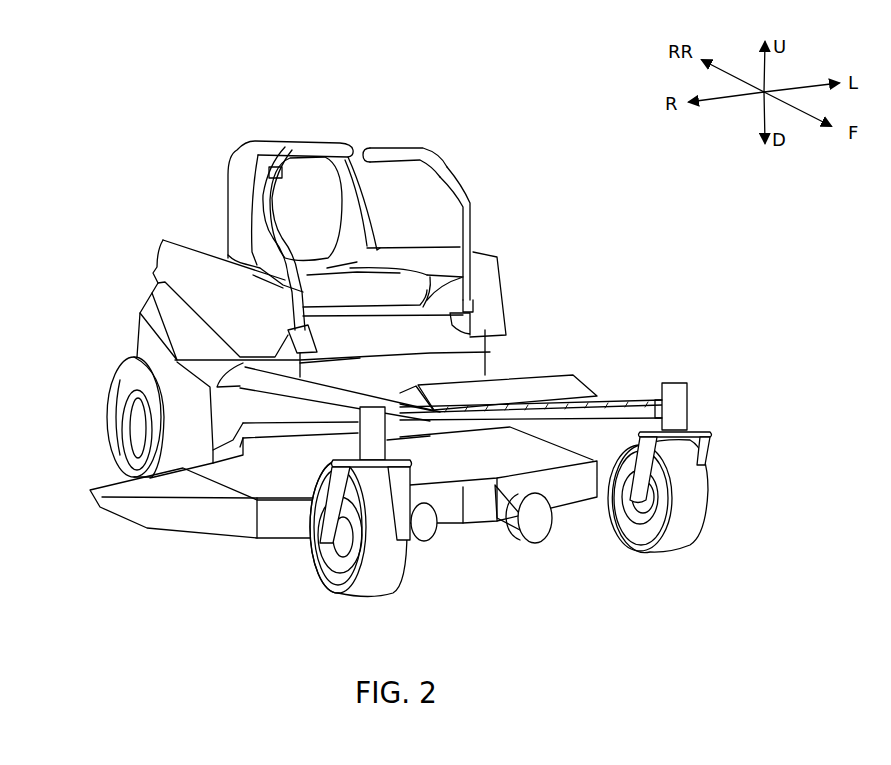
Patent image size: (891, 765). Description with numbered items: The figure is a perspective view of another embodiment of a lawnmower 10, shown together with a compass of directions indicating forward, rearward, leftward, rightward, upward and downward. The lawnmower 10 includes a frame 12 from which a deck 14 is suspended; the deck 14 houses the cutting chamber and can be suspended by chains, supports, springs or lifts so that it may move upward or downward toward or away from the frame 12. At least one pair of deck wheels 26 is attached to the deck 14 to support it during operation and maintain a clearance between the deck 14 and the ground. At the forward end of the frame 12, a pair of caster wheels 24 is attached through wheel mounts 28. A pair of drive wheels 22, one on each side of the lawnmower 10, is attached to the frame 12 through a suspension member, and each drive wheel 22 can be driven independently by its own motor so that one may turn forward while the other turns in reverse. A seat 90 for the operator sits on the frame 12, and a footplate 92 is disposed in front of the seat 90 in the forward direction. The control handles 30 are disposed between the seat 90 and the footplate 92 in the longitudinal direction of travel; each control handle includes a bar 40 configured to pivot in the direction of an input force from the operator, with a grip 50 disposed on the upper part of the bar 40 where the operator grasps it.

The lawnmower 10 is at (183, 94).
The frame 12 is at (626, 398).
The deck 14 is at (280, 542).
The drive wheels 22 is at (112, 378).
The caster wheels 24 is at (697, 537).
The deck wheels 26 is at (552, 520).
The wheel mounts 28 is at (710, 438).
The control handles 30 is at (481, 161).
The bar 40 is at (479, 215).
The grip 50 is at (420, 148).
The seat 90 is at (233, 185).
The footplate 92 is at (543, 377).